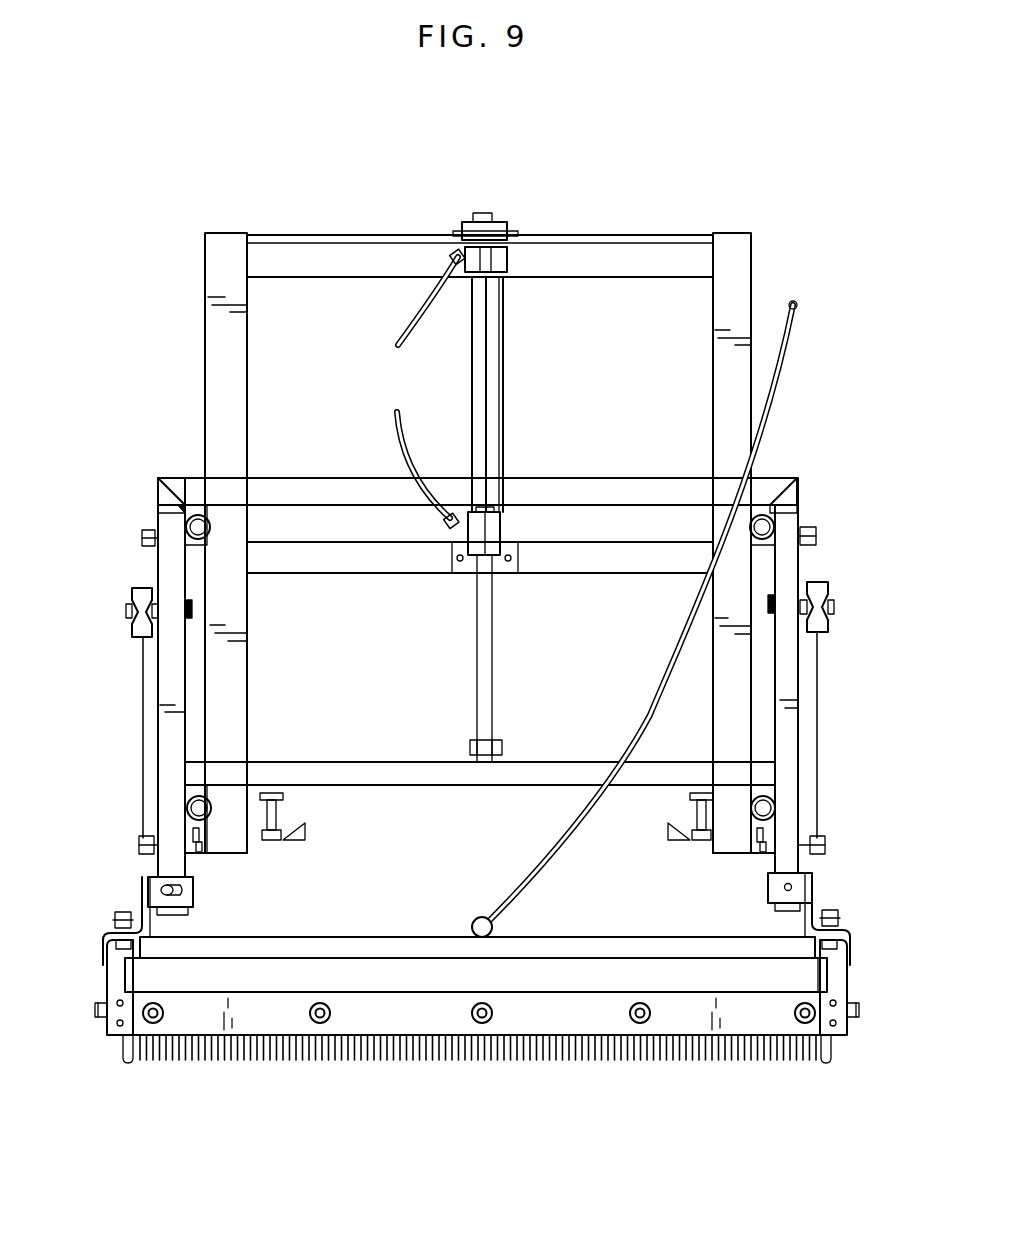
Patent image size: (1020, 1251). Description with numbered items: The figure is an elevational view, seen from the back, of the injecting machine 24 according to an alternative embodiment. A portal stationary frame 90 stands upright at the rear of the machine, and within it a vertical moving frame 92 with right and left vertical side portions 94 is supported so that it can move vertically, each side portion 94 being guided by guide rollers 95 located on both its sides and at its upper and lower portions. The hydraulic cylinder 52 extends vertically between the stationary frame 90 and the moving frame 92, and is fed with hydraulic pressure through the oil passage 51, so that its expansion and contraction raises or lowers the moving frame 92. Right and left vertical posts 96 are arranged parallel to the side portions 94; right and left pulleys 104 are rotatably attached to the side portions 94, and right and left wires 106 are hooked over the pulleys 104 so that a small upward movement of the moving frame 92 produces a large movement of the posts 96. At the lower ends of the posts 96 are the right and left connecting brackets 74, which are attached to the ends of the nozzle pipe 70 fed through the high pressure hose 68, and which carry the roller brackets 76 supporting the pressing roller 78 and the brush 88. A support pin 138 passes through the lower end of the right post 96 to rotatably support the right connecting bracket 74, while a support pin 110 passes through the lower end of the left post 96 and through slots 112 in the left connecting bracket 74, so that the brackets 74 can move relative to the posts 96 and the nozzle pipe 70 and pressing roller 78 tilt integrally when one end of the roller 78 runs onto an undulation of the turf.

The injecting machine 24 is at (636, 191).
The oil passage 51 is at (425, 330).
The hydraulic cylinder 52 is at (488, 370).
The high pressure hose 68 is at (642, 712).
The nozzle pipe 70 is at (594, 948).
The connecting bracket 74 is at (140, 905).
The roller bracket 76 is at (103, 972).
The pressing roller 78 is at (392, 975).
The brush 88 is at (733, 1040).
The portal stationary frame 90 is at (222, 262).
The vertical moving frame 92 is at (205, 500).
The vertical side portion 94 is at (170, 497).
The guide roller 95 is at (185, 518).
The vertical post 96 is at (178, 685).
The pulley 104 is at (132, 590).
The wire 106 is at (143, 725).
The support pin 110 is at (158, 880).
The slot 112 is at (195, 893).
The support pin 138 is at (792, 887).